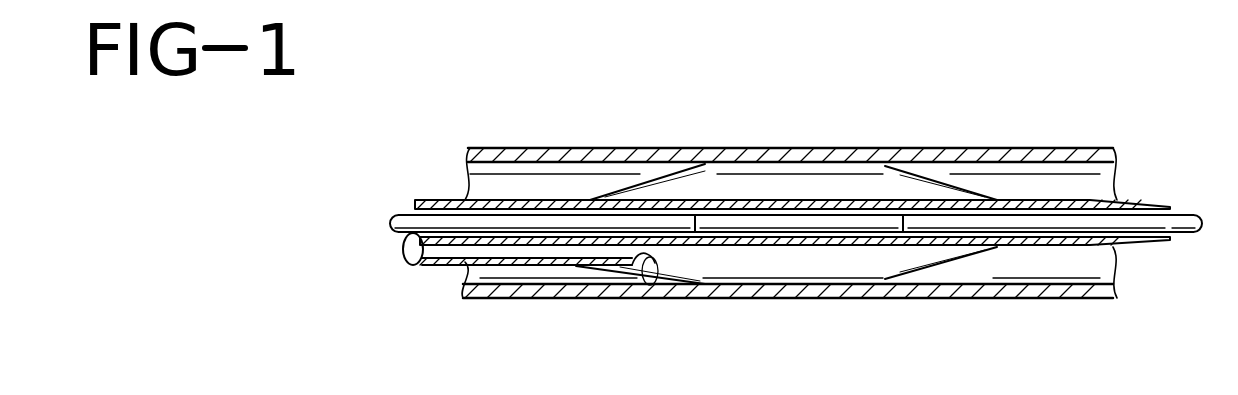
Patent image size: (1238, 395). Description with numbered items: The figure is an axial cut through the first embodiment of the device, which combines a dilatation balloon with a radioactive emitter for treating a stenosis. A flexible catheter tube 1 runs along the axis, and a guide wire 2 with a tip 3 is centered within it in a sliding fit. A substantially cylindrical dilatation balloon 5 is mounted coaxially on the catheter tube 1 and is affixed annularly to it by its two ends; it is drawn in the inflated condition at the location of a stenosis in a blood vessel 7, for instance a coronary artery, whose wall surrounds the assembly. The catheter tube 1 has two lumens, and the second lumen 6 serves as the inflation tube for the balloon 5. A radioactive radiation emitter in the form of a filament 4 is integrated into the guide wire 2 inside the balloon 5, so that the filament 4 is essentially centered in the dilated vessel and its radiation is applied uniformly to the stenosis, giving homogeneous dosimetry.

The flexible catheter tube 1 is at (666, 200).
The guide wire 2 is at (947, 227).
The tip 3 is at (1193, 217).
The radioactive filament 4 is at (780, 223).
The dilatation balloon 5 is at (653, 290).
The second lumen 6 is at (453, 250).
The blood vessel 7 is at (866, 160).